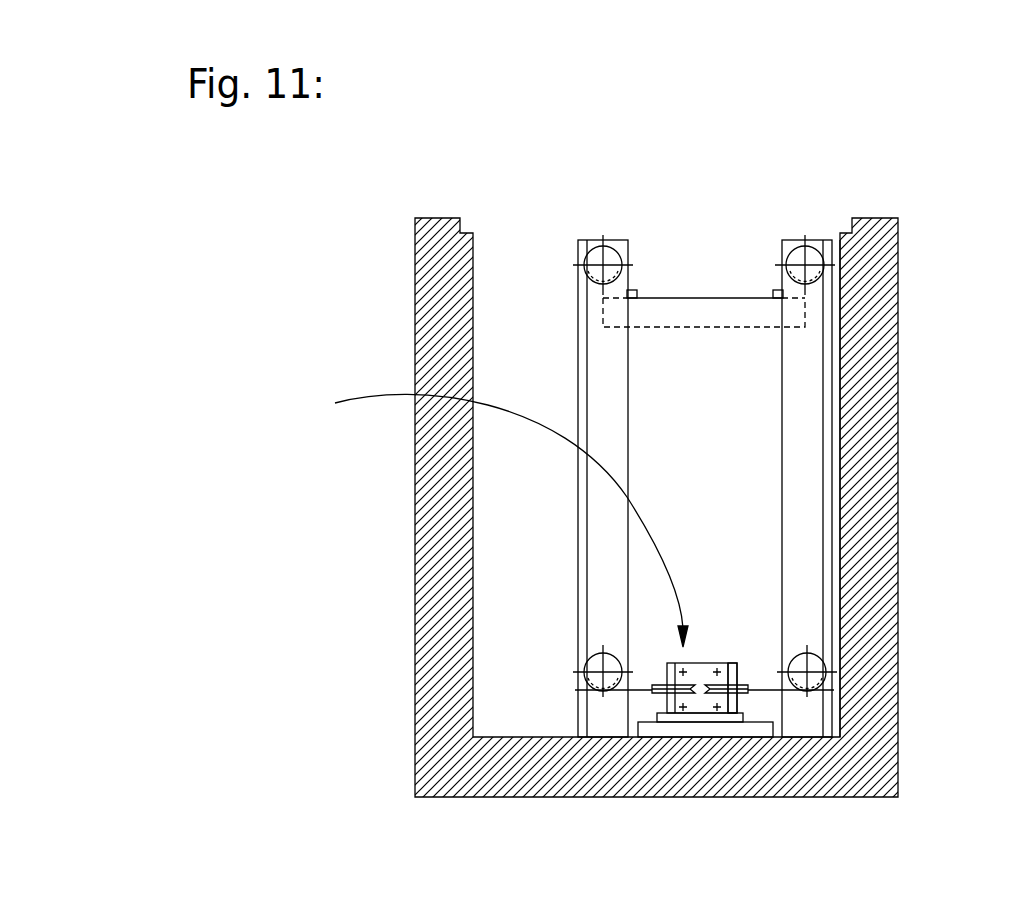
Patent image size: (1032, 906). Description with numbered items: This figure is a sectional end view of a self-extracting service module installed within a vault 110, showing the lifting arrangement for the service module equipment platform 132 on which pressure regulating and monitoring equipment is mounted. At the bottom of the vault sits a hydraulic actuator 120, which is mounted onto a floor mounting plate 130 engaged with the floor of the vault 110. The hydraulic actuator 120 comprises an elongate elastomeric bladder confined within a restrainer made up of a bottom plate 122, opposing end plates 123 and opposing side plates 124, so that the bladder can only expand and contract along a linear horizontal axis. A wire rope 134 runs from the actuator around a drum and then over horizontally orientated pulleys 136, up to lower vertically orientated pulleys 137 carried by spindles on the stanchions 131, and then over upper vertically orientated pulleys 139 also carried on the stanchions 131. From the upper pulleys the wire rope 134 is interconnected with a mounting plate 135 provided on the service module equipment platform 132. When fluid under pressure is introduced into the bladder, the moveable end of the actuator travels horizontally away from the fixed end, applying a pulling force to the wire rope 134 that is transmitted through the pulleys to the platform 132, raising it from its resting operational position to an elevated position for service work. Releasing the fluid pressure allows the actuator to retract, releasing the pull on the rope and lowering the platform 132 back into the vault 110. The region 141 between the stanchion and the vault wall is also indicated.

The vault 110 is at (415, 280).
The hydraulic actuator 120 is at (488, 520).
The bottom plate 122 is at (747, 717).
The end plates 123 is at (700, 663).
The side plates 124 is at (735, 663).
The floor mounting plate 130 is at (773, 728).
The stanchions 131 is at (617, 240).
The service module equipment platform 132 is at (690, 297).
The wire rope 134 is at (587, 557).
The mounting plate 135 is at (633, 295).
The horizontally orientated pulleys 136 is at (652, 690).
The lower vertically orientated pulleys 137 is at (590, 659).
The upper vertically orientated pulleys 139 is at (590, 250).
The gap 141 is at (840, 240).